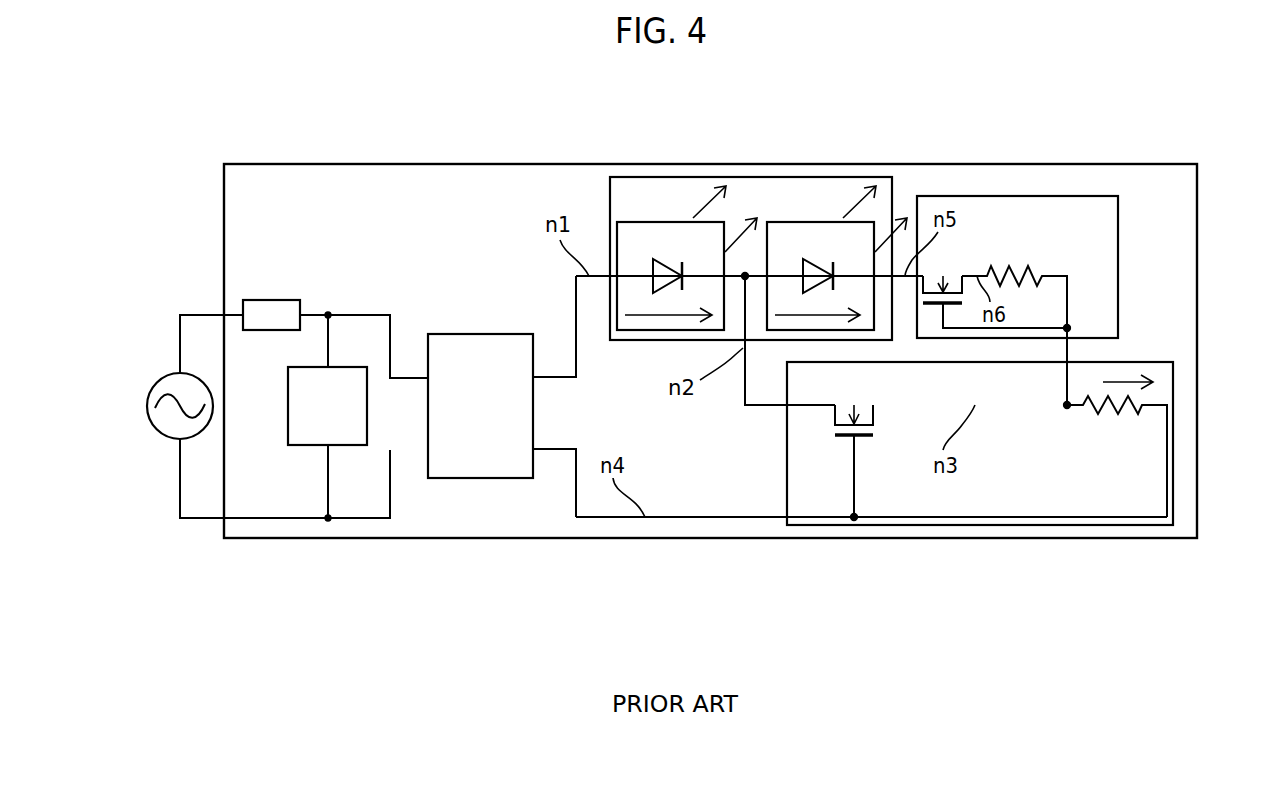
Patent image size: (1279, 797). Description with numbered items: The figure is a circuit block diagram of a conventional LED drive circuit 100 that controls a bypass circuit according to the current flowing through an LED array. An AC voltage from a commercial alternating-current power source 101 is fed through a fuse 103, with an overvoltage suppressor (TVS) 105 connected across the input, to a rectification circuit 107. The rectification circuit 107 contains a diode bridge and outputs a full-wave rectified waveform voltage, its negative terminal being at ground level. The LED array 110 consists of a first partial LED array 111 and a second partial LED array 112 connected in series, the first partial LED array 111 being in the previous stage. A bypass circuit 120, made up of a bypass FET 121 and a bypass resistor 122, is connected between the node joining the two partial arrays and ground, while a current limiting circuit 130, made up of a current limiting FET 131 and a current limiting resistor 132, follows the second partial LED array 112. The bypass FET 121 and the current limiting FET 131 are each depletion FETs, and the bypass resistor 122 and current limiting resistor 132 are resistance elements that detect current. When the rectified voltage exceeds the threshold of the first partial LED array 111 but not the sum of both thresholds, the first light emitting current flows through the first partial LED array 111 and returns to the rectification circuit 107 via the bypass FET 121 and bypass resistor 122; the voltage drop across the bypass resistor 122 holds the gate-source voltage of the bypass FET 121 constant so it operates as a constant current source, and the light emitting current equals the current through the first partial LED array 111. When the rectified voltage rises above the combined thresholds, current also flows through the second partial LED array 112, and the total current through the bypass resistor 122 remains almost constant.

The LED drive circuit 100 is at (537, 164).
The commercial alternating-current power source 101 is at (250, 416).
The fuse 103 is at (300, 307).
The overvoltage suppressor (TVS) 105 is at (288, 413).
The rectification circuit 107 is at (482, 334).
The LED array 110 is at (645, 177).
The first partial LED array 111 is at (668, 222).
The second partial LED array 112 is at (804, 222).
The bypass circuit 120 is at (815, 525).
The bypass FET 121 is at (845, 405).
The bypass resistor 122 is at (1110, 417).
The current limiting circuit 130 is at (975, 196).
The current limiting FET 131 is at (940, 276).
The current limiting resistor 132 is at (1025, 262).